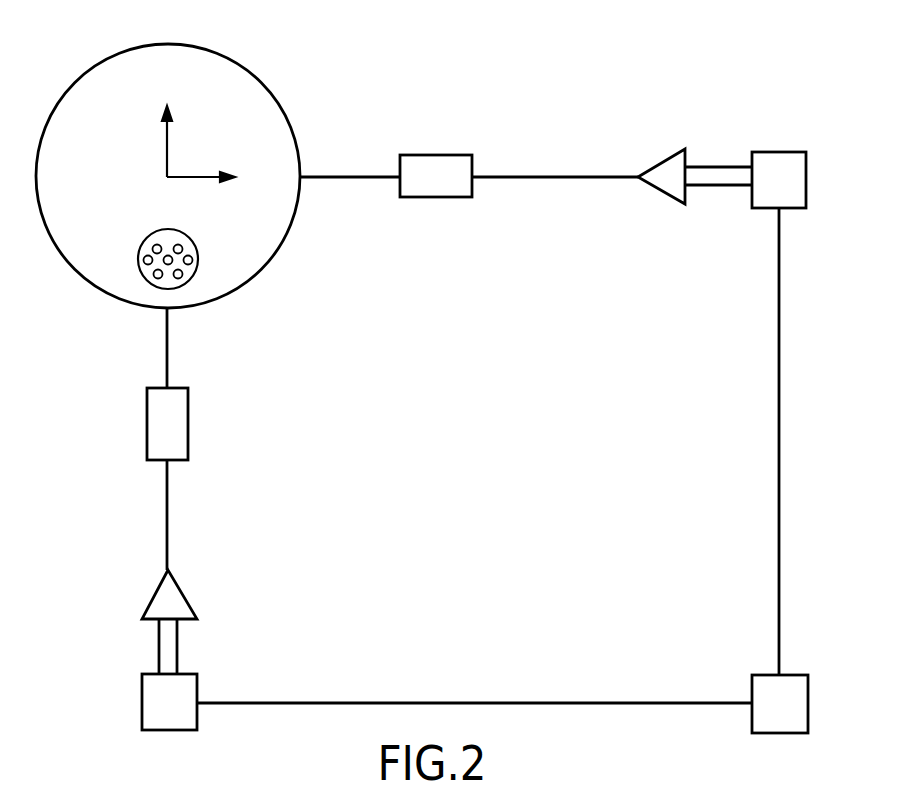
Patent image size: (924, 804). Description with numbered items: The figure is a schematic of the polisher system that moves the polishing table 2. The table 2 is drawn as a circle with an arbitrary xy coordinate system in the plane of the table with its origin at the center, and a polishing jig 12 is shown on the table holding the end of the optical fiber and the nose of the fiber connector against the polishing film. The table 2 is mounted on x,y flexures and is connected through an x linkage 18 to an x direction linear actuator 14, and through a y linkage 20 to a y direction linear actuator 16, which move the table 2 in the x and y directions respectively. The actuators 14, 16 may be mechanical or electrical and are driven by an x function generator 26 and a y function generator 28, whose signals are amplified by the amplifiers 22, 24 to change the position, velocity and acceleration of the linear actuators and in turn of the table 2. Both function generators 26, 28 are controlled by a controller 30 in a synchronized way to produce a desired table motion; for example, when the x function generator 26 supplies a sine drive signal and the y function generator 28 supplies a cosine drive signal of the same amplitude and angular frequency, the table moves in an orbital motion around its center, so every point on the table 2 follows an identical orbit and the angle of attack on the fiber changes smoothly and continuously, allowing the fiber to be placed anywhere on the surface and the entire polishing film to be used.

The polishing table 2 is at (247, 73).
The polishing jig 12 is at (138, 259).
The x direction linear actuator 14 is at (459, 155).
The y direction linear actuator 16 is at (147, 433).
The x linkage 18 is at (362, 177).
The y linkage 20 is at (167, 353).
The amplifier 22 is at (656, 162).
The amplifier 24 is at (151, 605).
The x function generator 26 is at (806, 160).
The y function generator 28 is at (142, 723).
The controller 30 is at (808, 710).